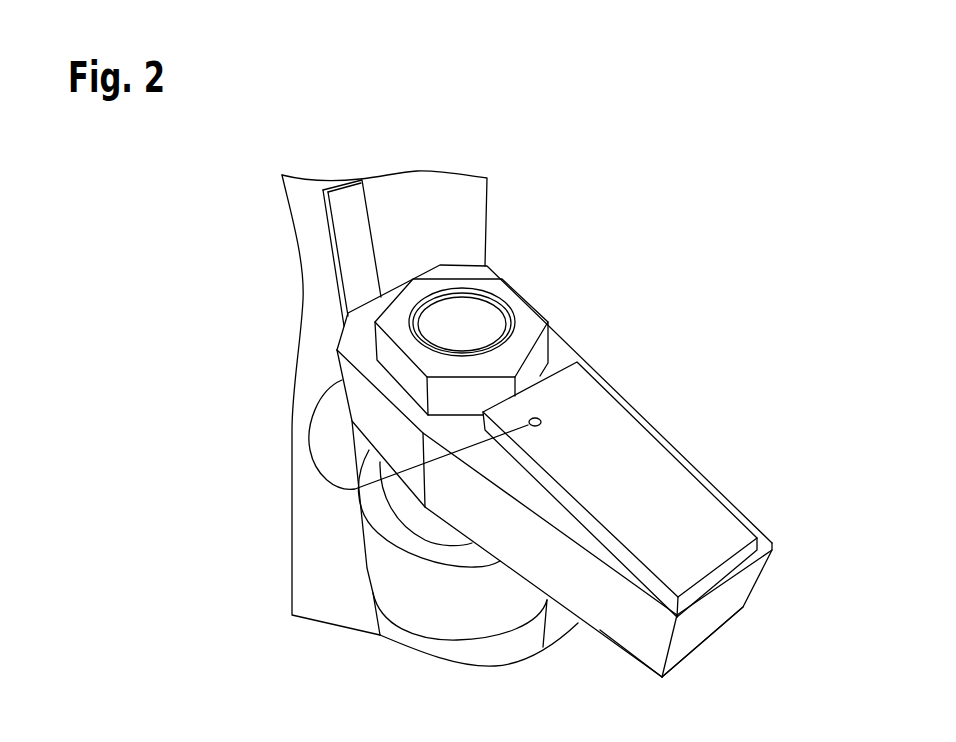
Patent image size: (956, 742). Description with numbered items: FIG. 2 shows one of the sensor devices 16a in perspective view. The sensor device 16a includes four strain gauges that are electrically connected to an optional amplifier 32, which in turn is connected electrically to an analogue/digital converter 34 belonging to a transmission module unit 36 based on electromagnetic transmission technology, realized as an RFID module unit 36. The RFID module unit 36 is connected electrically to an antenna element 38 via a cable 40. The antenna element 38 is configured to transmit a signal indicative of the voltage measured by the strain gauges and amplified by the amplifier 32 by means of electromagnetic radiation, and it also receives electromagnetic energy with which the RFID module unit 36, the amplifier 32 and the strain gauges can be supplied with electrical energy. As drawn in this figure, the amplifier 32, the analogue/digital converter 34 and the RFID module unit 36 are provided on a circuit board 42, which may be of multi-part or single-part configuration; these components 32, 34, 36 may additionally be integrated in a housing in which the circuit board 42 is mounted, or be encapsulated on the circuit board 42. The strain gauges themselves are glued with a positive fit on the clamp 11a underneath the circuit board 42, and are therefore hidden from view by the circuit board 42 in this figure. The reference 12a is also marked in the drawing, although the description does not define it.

The clamp 11a is at (614, 621).
The bearing plate with cylindrical boss 12a is at (340, 630).
The sensor device 16a is at (647, 227).
The amplifier 32 is at (573, 471).
The analogue/digital converter 34 is at (573, 471).
The RFID module unit 36 is at (694, 408).
The antenna element 38 is at (349, 236).
The cable 40 is at (313, 461).
The circuit board 42 is at (680, 502).